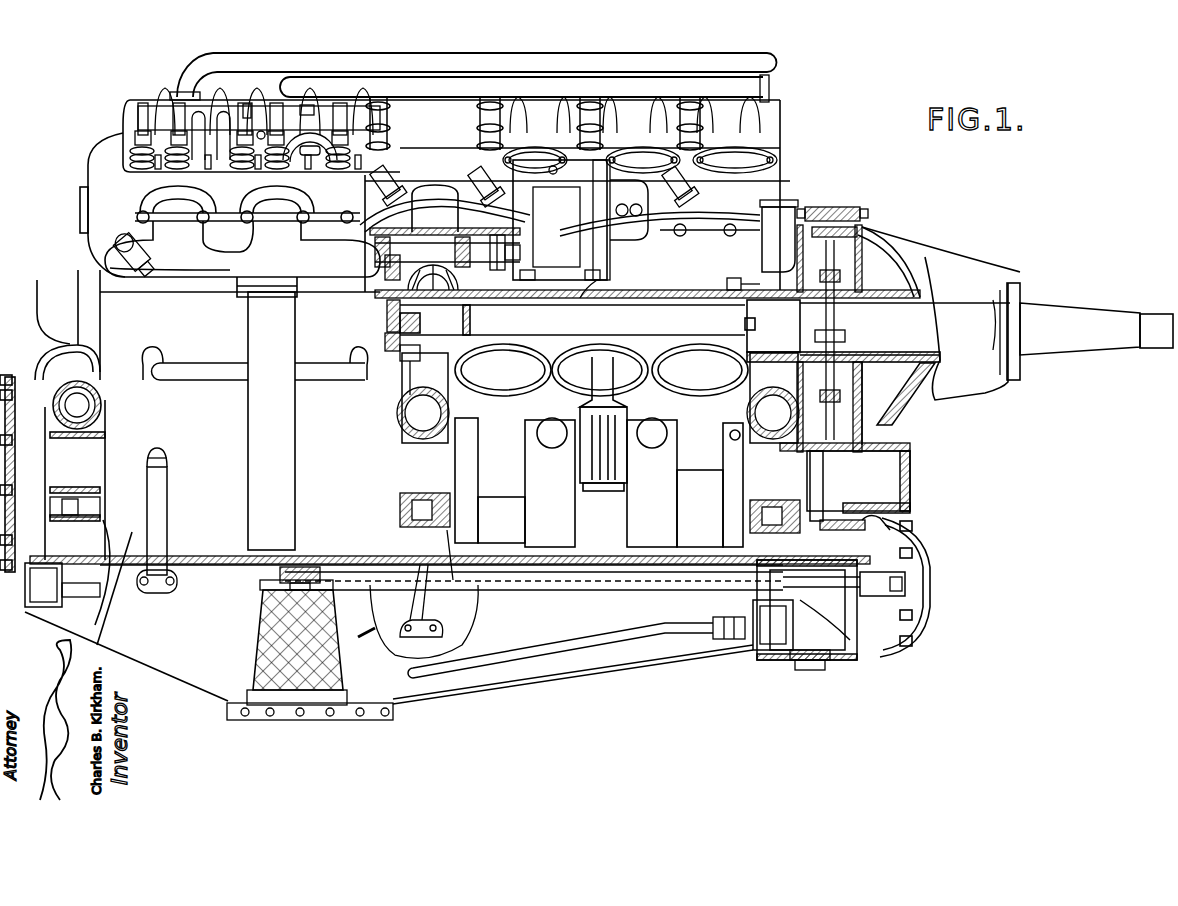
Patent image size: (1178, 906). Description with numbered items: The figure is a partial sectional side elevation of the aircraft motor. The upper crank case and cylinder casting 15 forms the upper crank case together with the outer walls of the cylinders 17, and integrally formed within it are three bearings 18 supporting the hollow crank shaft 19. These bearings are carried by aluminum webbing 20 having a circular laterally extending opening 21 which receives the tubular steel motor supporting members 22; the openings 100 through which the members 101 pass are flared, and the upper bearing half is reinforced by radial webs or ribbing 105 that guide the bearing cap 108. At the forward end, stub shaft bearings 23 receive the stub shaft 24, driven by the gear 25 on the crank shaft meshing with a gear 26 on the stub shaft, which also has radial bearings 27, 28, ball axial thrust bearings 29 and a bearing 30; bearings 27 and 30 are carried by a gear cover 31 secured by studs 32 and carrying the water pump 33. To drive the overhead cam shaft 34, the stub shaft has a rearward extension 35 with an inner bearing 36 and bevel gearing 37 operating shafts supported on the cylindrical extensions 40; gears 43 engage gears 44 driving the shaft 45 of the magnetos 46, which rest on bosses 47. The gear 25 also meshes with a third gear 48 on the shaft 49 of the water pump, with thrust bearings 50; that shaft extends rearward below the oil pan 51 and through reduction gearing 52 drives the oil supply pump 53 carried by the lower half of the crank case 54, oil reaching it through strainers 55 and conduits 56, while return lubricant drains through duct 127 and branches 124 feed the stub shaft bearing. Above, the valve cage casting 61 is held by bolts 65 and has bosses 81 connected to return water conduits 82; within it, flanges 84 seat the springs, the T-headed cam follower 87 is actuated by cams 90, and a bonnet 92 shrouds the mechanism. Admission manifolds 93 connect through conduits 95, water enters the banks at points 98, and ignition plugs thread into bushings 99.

The upper crank case and cylinder casting 15 is at (36, 356).
The outer walls of the cylinders 17 is at (133, 300).
The bearings 18 is at (73, 483).
The crank shaft 19 is at (443, 463).
The aluminum webbing 20 is at (103, 502).
The circular laterally extending opening 21 is at (453, 405).
The tubular steel motor supporting members 22 is at (90, 396).
The stub shaft bearings 23 is at (945, 287).
The stub shaft 24 is at (1058, 322).
The gear 25 is at (880, 537).
The gear 26 is at (862, 232).
The radial bearing 27 is at (887, 293).
The radial bearing 28 is at (790, 348).
The ball axial thrust bearings 29 is at (905, 262).
The bearing 30 is at (988, 290).
The gear cover 31 is at (1005, 278).
The studs 32 is at (836, 215).
The water pump 33 is at (930, 571).
The overhead cam shaft 34 is at (307, 112).
The rearward extension of the stub shaft 35 is at (577, 320).
The inner bearing 36 is at (395, 297).
The bevel gearing 37 is at (393, 267).
The cylindrical extensions 40 is at (502, 127).
The gears 43 is at (393, 390).
The gears 44 is at (375, 203).
The shaft of the magnetos 45 is at (433, 253).
The magnetos 46 is at (561, 220).
The bosses 47 is at (598, 290).
The third gear 48 is at (803, 652).
The shaft of the water pump 49 is at (863, 587).
The thrust bearings 50 is at (853, 632).
The oil pan 51 is at (587, 567).
The reduction gearing 52 is at (277, 573).
The oil supply pump 53 is at (263, 650).
The lower half of the crank case 54 is at (185, 667).
The strainers 55 is at (40, 608).
The conduits 56 is at (627, 640).
The valve cage casting 61 is at (733, 223).
The bolts 65 is at (777, 203).
The bosses 81 is at (690, 187).
The return water conduits 82 is at (425, 66).
The flanges 84 is at (312, 145).
The T-headed cam follower 87 is at (263, 132).
The cams 90 is at (246, 106).
The bonnet 92 is at (640, 92).
The admission manifolds 93 is at (242, 241).
The conduits 95 is at (271, 421).
The points 98 is at (243, 355).
The bushings 99 is at (683, 180).
The openings 100 is at (443, 397).
The members 101 is at (420, 425).
The radial webs or ribbing 105 is at (393, 400).
The bearing cap 108 is at (463, 612).
The branches 124 is at (733, 280).
The duct 127 is at (912, 385).